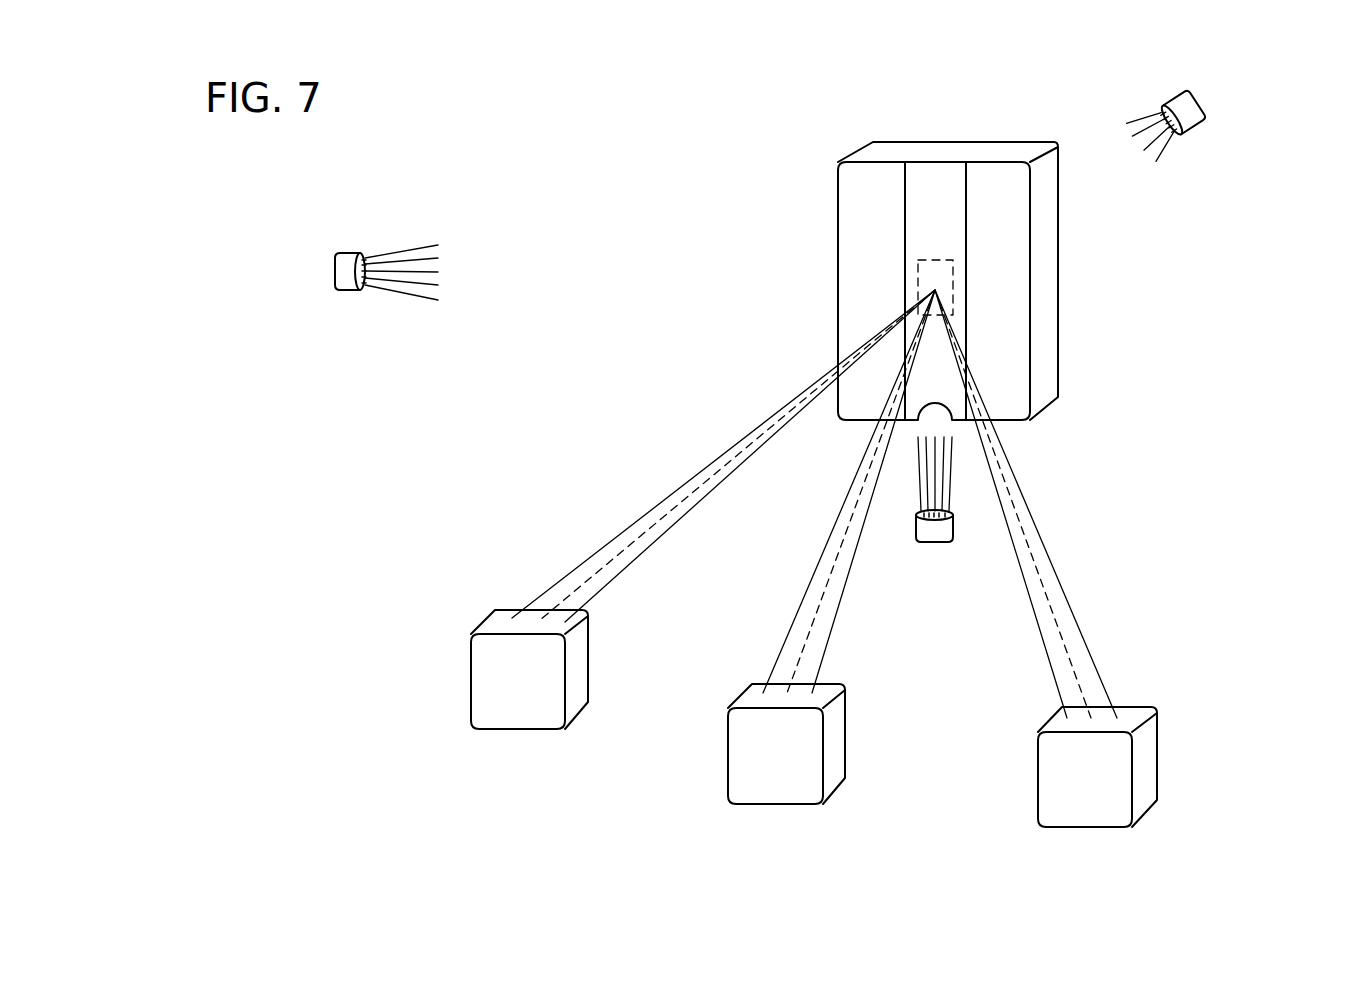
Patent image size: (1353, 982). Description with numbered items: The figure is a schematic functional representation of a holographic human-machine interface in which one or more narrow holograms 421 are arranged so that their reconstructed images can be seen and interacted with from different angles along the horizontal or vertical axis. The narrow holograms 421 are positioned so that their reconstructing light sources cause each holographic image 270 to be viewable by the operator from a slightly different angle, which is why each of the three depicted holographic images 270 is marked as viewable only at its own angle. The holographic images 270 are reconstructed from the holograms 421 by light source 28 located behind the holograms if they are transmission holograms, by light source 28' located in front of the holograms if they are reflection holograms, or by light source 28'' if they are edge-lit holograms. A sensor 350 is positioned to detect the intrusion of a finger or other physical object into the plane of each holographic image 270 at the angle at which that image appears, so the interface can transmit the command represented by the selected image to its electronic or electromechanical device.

The narrow holograms 421 is at (876, 180).
The sensor 350 is at (937, 290).
The holographic images 270 is at (728, 742).
The light source 28 is at (1207, 124).
The light source 28' is at (380, 318).
The light source 28'' is at (947, 556).